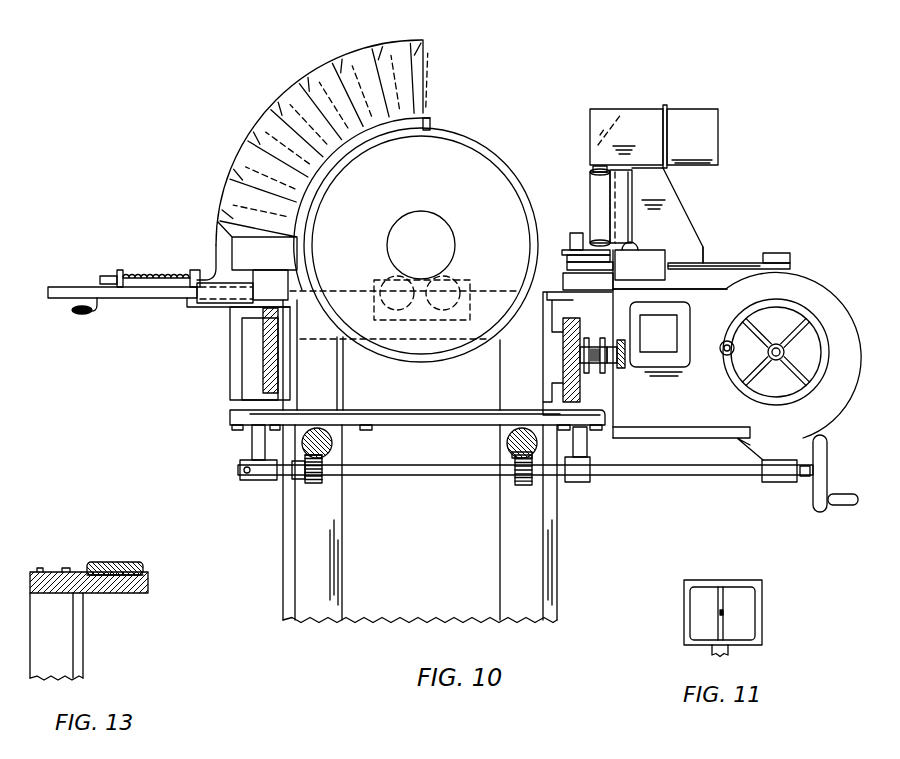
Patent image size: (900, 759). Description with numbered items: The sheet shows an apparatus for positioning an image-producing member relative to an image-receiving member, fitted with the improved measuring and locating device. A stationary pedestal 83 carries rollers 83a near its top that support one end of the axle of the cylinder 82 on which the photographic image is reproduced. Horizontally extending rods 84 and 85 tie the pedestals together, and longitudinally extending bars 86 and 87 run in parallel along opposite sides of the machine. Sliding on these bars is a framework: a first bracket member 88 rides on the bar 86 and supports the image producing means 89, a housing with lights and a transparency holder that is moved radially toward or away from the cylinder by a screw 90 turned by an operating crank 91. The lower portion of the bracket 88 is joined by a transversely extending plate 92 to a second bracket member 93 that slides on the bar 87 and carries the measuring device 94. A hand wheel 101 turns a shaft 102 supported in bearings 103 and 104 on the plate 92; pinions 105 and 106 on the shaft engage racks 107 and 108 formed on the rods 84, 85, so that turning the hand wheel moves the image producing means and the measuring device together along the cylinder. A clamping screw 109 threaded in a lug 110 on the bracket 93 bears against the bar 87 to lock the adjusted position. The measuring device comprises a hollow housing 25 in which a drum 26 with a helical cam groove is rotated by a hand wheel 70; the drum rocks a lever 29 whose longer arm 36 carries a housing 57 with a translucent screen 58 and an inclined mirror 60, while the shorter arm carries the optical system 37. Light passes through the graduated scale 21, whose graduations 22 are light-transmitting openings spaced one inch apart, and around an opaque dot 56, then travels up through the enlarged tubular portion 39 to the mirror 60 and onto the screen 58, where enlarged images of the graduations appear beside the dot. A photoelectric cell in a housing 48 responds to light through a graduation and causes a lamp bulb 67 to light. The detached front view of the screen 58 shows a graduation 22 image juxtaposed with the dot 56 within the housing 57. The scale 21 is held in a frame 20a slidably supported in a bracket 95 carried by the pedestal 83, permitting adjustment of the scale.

In FIG. 10, the image producing means 89 is at (245, 129).
In FIG. 10, the cylinder 82 is at (530, 176).
In FIG. 10, the rollers 83a is at (465, 281).
In FIG. 10, the pedestal 83 is at (508, 576).
In FIG. 10, the screw 90 is at (166, 272).
In FIG. 10, the operating crank 91 is at (104, 308).
In FIG. 10, the bar 86 is at (265, 352).
In FIG. 10, the bracket member 88 is at (240, 408).
In FIG. 10, the plate 92 is at (440, 412).
In FIG. 10, the shaft 102 is at (688, 476).
In FIG. 10, the hand wheel 101 is at (825, 512).
In FIG. 10, the rod 85 is at (333, 440).
In FIG. 10, the rack 108 is at (323, 458).
In FIG. 10, the rod 84 is at (507, 440).
In FIG. 10, the rack 107 is at (514, 457).
In FIG. 10, the bearing 104 is at (268, 480).
In FIG. 10, the pinion 106 is at (303, 482).
In FIG. 10, the pinion 105 is at (514, 486).
In FIG. 10, the bearing 103 is at (573, 482).
In FIG. 10, the bracket member 93 is at (552, 396).
In FIG. 10, the bar 87 is at (565, 357).
In FIG. 10, the boss or lug 110 is at (592, 366).
In FIG. 10, the clamping screw 109 is at (621, 370).
In FIG. 10, the scale or graduated member 21 is at (566, 281).
In FIG. 13, the scale or graduated member 21 is at (120, 563).
In FIG. 10, the housing 48 is at (572, 235).
In FIG. 10, the enlarged tubular portion 39 is at (591, 187).
In FIG. 10, the optical system 37 is at (588, 211).
In FIG. 10, the lamp bulb 67 is at (636, 241).
In FIG. 10, the screen 58 is at (664, 201).
In FIG. 11, the screen 58 is at (700, 600).
In FIG. 10, the housing 57 is at (648, 108).
In FIG. 11, the housing 57 is at (745, 582).
In FIG. 10, the mirror 60 is at (602, 118).
In FIG. 10, the arm 36 is at (780, 256).
In FIG. 10, the lever 29 is at (714, 264).
In FIG. 10, the measuring device 94 is at (745, 254).
In FIG. 10, the housing 25 is at (862, 300).
In FIG. 10, the drum member 26 is at (805, 280).
In FIG. 10, the hand wheel 70 is at (822, 360).
In FIG. 11, the graduations 22 is at (726, 598).
In FIG. 11, the dot 56 is at (724, 613).
In FIG. 13, the bracket 95 is at (50, 572).
In FIG. 13, the frame or mounting means 20a is at (145, 570).